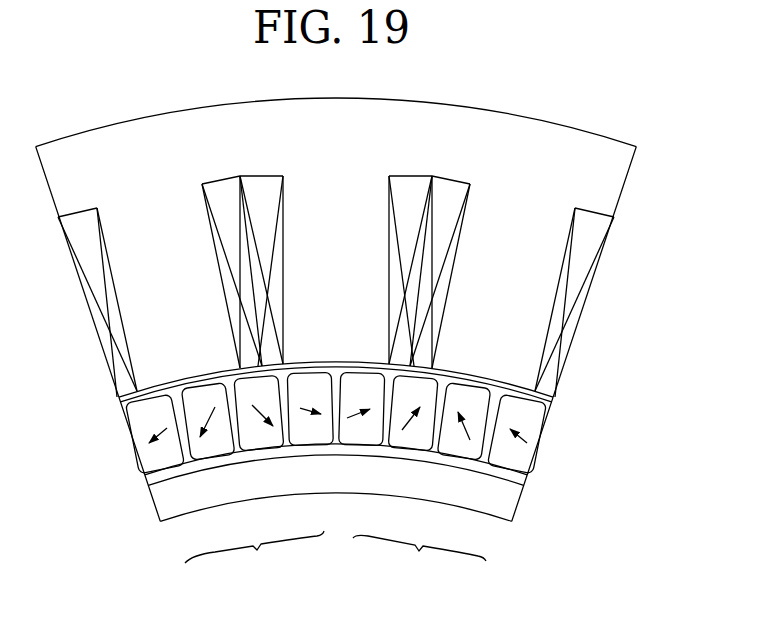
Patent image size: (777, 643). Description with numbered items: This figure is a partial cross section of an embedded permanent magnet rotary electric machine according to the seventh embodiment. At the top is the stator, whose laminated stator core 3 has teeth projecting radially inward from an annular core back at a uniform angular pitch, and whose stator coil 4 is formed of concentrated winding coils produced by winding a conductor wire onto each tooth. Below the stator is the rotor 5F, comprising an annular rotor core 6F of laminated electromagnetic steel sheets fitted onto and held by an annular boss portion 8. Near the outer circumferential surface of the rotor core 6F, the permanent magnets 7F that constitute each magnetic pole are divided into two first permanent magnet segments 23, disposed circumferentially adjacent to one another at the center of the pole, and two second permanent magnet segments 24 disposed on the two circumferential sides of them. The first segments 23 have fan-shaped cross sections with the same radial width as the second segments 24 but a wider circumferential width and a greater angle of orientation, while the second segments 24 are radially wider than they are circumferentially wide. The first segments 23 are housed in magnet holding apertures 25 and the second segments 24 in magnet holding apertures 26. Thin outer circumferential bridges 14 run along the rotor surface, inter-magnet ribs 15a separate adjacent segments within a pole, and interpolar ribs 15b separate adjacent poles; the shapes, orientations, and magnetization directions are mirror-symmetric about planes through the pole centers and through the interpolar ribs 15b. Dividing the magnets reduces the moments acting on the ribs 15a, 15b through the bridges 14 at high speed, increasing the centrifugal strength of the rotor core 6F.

The stator core 3 is at (624, 184).
The stator coil 4 is at (600, 240).
The outer circumferential bridges 14 is at (530, 395).
The inter-magnet ribs 15a is at (499, 413).
The interpolar ribs 15b is at (334, 443).
The annular boss portion 8 is at (157, 503).
The rotor core 6F is at (147, 480).
The rotor 5F is at (533, 475).
The first permanent magnet segments 23 is at (217, 450).
The second permanent magnet segments 24 is at (171, 462).
The magnet holding apertures 25 is at (178, 416).
The magnet holding apertures 26 is at (141, 443).
The permanent magnets 7F is at (335, 561).